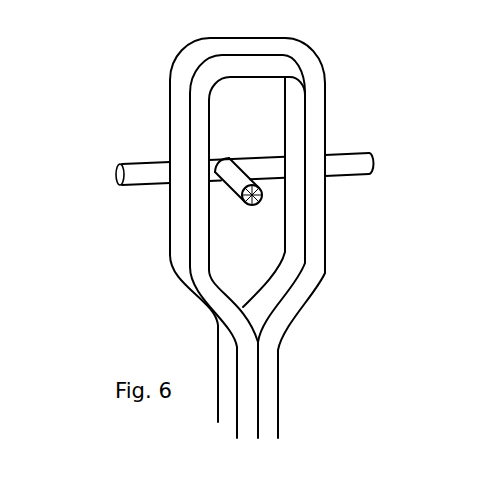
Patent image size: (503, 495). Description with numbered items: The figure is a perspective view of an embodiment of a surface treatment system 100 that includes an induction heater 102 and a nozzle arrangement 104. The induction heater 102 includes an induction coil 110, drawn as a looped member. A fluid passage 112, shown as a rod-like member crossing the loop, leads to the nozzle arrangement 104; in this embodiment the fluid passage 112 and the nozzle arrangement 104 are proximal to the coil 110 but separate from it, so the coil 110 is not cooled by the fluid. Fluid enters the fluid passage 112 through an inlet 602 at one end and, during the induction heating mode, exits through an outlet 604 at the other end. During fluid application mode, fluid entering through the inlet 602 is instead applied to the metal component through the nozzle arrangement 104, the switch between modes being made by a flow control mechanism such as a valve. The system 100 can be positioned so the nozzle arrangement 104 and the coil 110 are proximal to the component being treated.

The system 100 is at (243, 230).
The induction heater 102 is at (313, 195).
The nozzle arrangement 104 is at (276, 228).
The induction coil 110 is at (197, 118).
The fluid passage 112 is at (243, 185).
The inlet 602 is at (115, 168).
The outlet 604 is at (373, 157).